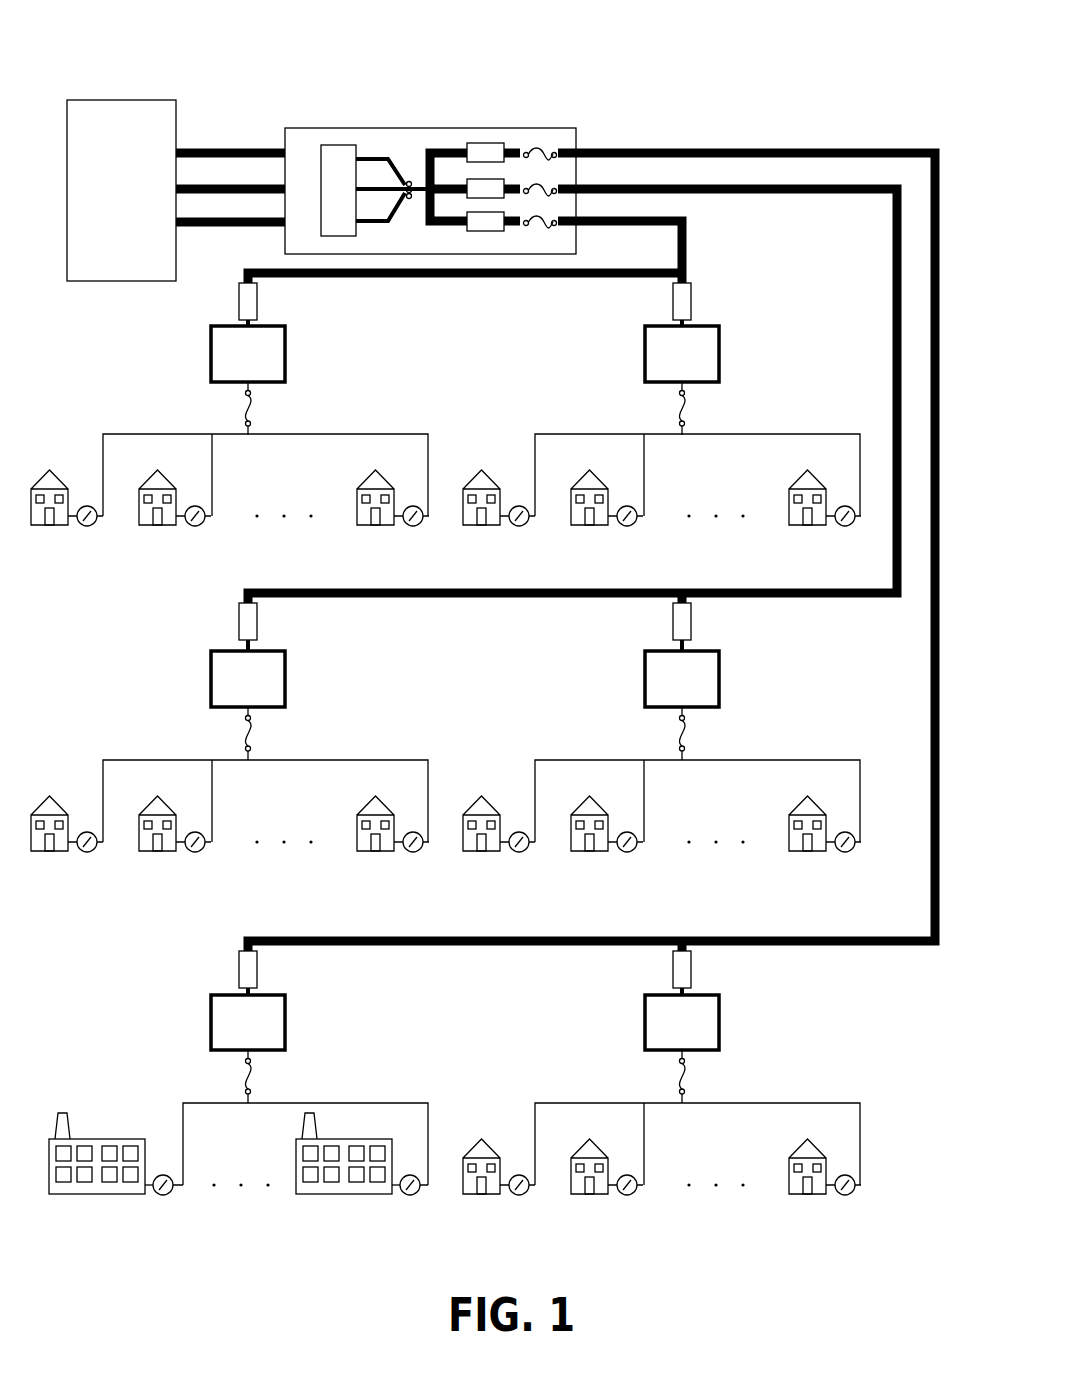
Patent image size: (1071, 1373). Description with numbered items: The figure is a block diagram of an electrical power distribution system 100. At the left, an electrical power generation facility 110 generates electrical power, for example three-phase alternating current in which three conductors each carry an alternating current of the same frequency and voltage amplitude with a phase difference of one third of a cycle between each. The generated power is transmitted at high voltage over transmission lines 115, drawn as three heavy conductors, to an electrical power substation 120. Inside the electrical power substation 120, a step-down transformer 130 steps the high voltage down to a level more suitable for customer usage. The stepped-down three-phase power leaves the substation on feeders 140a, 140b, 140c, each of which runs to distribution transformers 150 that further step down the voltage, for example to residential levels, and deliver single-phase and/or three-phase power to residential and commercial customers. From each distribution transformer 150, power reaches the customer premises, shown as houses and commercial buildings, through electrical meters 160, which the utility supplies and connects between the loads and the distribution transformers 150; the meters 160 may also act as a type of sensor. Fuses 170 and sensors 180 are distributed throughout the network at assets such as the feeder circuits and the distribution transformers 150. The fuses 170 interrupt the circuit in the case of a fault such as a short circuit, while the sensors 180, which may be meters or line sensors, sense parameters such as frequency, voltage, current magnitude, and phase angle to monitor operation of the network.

The electrical power distribution system 100 is at (128, 41).
The electrical power generation facility 110 is at (121, 190).
The transmission lines 115 is at (240, 231).
The electrical power substation 120 is at (330, 128).
The step-down transformer 130 is at (320, 150).
The feeder 140a is at (686, 264).
The feeder 140b is at (894, 296).
The feeder 140c is at (857, 150).
The distribution transformer 150 is at (465, 688).
The electrical meter 160 is at (90, 527).
The fuse 170 is at (548, 149).
The sensor 180 is at (473, 142).